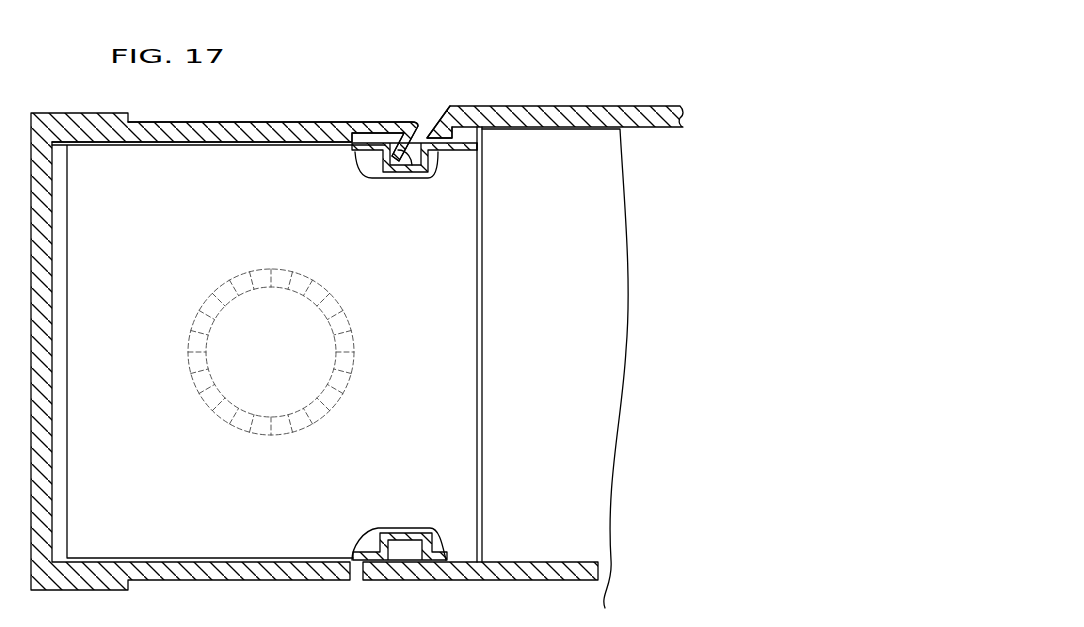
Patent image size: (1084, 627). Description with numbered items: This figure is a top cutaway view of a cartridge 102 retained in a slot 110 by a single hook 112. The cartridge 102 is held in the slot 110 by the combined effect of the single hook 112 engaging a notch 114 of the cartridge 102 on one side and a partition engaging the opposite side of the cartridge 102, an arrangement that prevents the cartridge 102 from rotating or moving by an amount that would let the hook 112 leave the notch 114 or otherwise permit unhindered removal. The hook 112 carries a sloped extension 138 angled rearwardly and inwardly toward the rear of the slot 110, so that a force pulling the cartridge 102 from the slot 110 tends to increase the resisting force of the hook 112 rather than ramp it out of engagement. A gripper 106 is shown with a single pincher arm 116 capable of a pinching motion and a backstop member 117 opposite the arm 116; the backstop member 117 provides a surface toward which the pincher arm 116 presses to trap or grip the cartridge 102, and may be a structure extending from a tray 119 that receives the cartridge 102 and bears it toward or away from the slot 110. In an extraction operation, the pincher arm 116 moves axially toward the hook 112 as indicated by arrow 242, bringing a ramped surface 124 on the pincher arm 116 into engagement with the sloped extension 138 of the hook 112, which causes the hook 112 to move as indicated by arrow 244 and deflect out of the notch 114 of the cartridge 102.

The gripper 106 is at (648, 85).
The slot 110 is at (60, 288).
The hook 112 is at (334, 122).
The notch 114 is at (395, 178).
The pincher arm 116 is at (557, 106).
The backstop member 117 is at (520, 580).
The tray 119 is at (600, 382).
The ramped surface 124 is at (435, 125).
The sloped extension 138 is at (400, 165).
The cartridge 102 is at (462, 278).
The arrow 242 is at (452, 88).
The arrow 244 is at (392, 115).